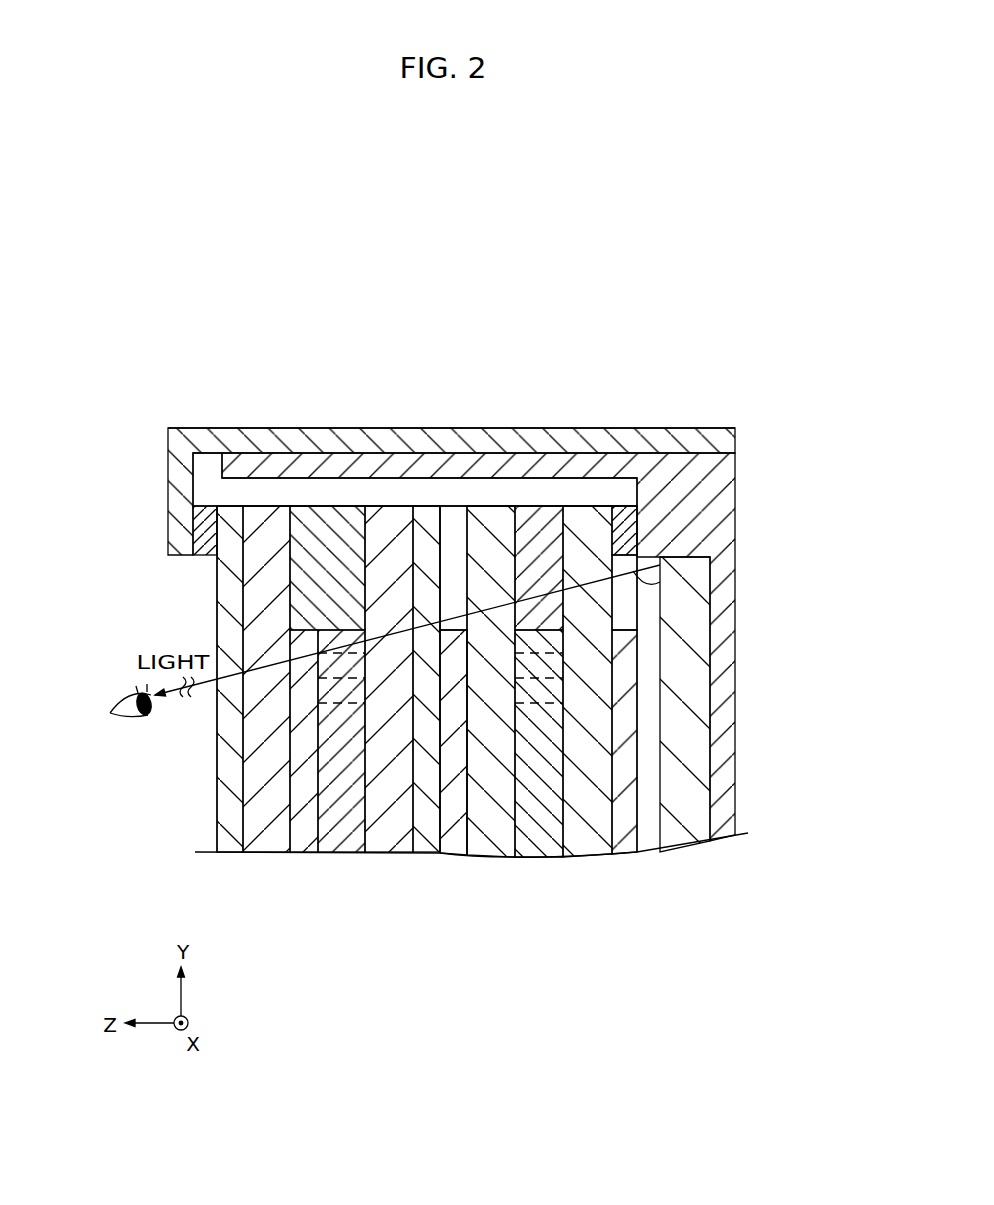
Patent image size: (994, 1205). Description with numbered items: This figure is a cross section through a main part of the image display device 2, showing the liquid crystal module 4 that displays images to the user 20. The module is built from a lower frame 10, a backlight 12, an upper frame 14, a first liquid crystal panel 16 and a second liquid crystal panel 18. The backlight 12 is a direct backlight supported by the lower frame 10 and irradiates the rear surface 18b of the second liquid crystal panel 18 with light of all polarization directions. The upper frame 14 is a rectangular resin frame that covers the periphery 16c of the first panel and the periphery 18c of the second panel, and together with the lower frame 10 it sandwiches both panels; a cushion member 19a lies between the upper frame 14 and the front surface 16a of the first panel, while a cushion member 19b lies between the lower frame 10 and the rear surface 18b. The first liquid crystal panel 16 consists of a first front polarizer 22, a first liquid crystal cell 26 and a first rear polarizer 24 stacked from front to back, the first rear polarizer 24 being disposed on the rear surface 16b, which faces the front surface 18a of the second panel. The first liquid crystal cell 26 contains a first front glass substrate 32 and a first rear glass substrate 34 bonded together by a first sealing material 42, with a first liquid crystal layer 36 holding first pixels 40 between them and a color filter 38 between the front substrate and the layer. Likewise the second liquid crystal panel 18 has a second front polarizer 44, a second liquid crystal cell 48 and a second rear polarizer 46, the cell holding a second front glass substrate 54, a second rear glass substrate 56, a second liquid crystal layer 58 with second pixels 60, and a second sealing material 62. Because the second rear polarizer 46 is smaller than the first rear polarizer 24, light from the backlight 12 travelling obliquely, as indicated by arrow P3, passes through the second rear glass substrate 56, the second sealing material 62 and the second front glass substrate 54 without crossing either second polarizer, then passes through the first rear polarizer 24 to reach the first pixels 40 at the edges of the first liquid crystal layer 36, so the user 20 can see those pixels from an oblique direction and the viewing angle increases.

The image display device 2 is at (716, 366).
The liquid crystal module 4 is at (741, 464).
The lower frame 10 is at (722, 660).
The backlight 12 is at (683, 718).
The upper frame 14 is at (183, 495).
The first liquid crystal panel 16 is at (290, 676).
The front surface of first liquid crystal panel 16a is at (215, 812).
The rear surface of first liquid crystal panel 16b is at (443, 517).
The periphery of first liquid crystal panel 16c is at (365, 517).
The second liquid crystal panel 18 is at (465, 676).
The front surface of second liquid crystal panel 18a is at (440, 797).
The rear surface of second liquid crystal panel 18b is at (637, 828).
The periphery of second liquid crystal panel 18c is at (578, 508).
The cushion member 19a is at (207, 532).
The cushion member 19b is at (623, 530).
The user 20 is at (113, 694).
The first front polarizer 22 is at (231, 842).
The first rear polarizer 24 is at (422, 842).
The first liquid crystal cell 26 is at (296, 656).
The first front glass substrate 32 is at (266, 838).
The first rear glass substrate 34 is at (400, 700).
The first liquid crystal layer 36 is at (337, 834).
The color filter 38 is at (258, 639).
The first pixels 40 is at (337, 643).
The first sealing material 42 is at (322, 517).
The second front polarizer 44 is at (453, 843).
The second rear polarizer 46 is at (623, 845).
The second liquid crystal cell 48 is at (627, 656).
The second front glass substrate 54 is at (492, 845).
The second rear glass substrate 56 is at (585, 700).
The second liquid crystal layer 58 is at (651, 639).
The second pixels 60 is at (540, 642).
The second sealing material 62 is at (537, 517).
The arrow P3 is at (660, 565).